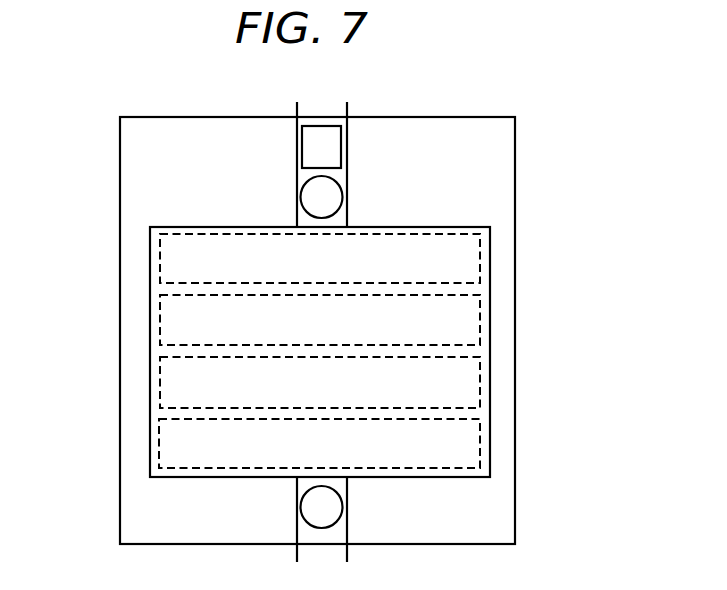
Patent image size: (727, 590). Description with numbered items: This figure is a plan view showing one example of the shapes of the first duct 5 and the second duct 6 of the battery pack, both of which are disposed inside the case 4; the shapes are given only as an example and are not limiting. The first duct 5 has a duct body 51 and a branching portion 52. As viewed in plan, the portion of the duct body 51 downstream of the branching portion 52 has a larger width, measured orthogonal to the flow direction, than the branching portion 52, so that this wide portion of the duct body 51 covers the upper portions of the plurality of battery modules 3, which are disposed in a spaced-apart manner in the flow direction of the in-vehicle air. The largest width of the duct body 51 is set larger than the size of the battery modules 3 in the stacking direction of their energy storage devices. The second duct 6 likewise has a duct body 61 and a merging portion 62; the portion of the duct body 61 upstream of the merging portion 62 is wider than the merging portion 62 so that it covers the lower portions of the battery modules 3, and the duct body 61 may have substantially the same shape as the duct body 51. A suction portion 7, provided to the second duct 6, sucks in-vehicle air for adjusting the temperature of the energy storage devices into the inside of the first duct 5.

The battery module 3 is at (160, 253).
The case 4 is at (120, 174).
The first duct 5 is at (271, 394).
The duct body 51 is at (150, 435).
The branching portion 52 is at (300, 511).
The second duct 6 is at (469, 148).
The duct body 61 is at (347, 173).
The merging portion 62 is at (342, 199).
The suction portion 7 is at (322, 137).